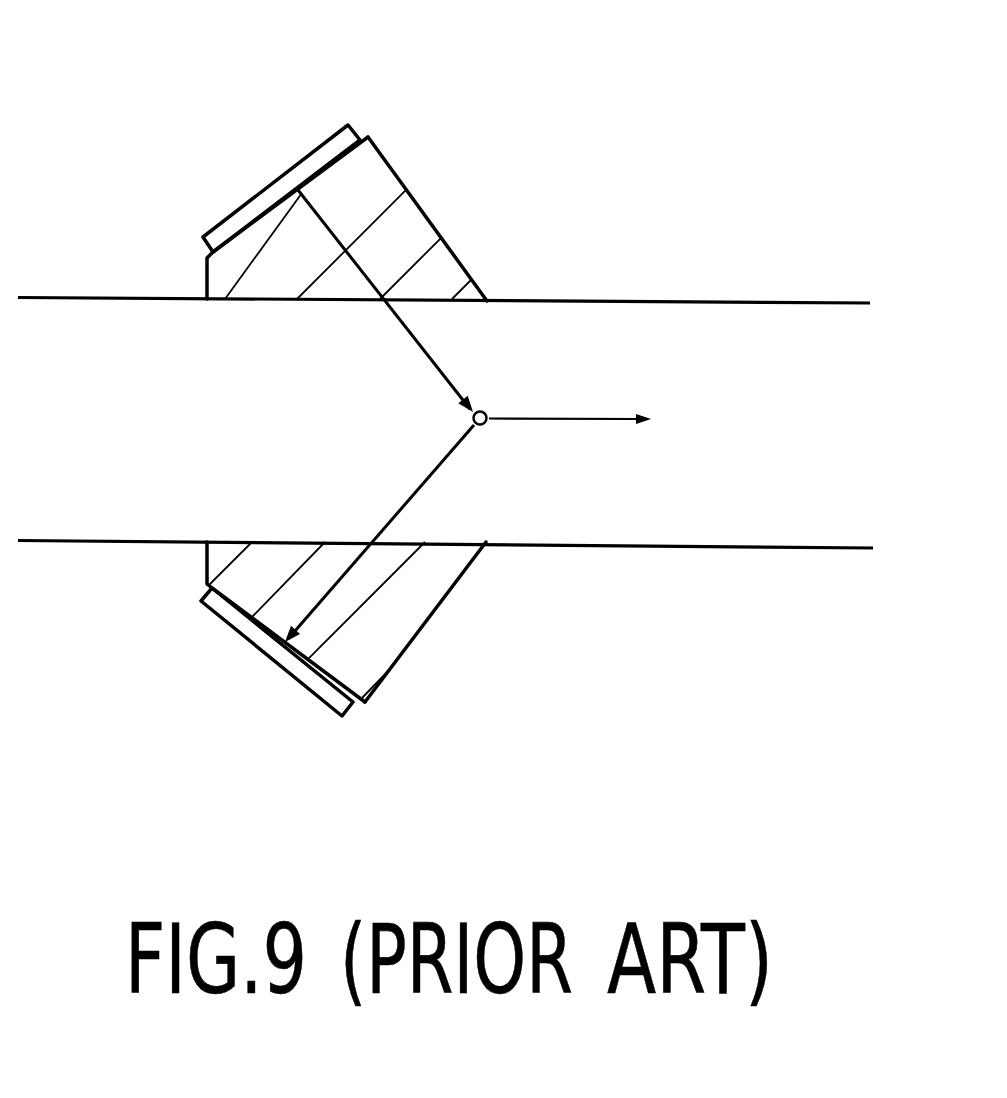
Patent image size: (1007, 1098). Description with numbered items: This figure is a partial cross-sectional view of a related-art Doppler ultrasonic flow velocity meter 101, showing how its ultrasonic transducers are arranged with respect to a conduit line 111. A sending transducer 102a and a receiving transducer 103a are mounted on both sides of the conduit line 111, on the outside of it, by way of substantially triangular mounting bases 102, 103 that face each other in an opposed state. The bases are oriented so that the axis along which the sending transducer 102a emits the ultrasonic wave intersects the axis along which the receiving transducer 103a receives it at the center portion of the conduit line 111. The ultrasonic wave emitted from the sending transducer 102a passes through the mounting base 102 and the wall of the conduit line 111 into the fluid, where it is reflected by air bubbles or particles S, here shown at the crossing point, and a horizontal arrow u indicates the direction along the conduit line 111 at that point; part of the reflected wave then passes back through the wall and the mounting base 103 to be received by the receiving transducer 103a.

The ultrasonic flow velocity meter 101 is at (585, 118).
The mounting base 102 is at (420, 225).
The sending transducer 102a is at (278, 178).
The mounting base 103 is at (425, 611).
The receiving transducer 103a is at (278, 652).
The conduit line 111 is at (751, 300).
The air bubbles or particles S is at (487, 411).
The direction of displacement u is at (593, 414).